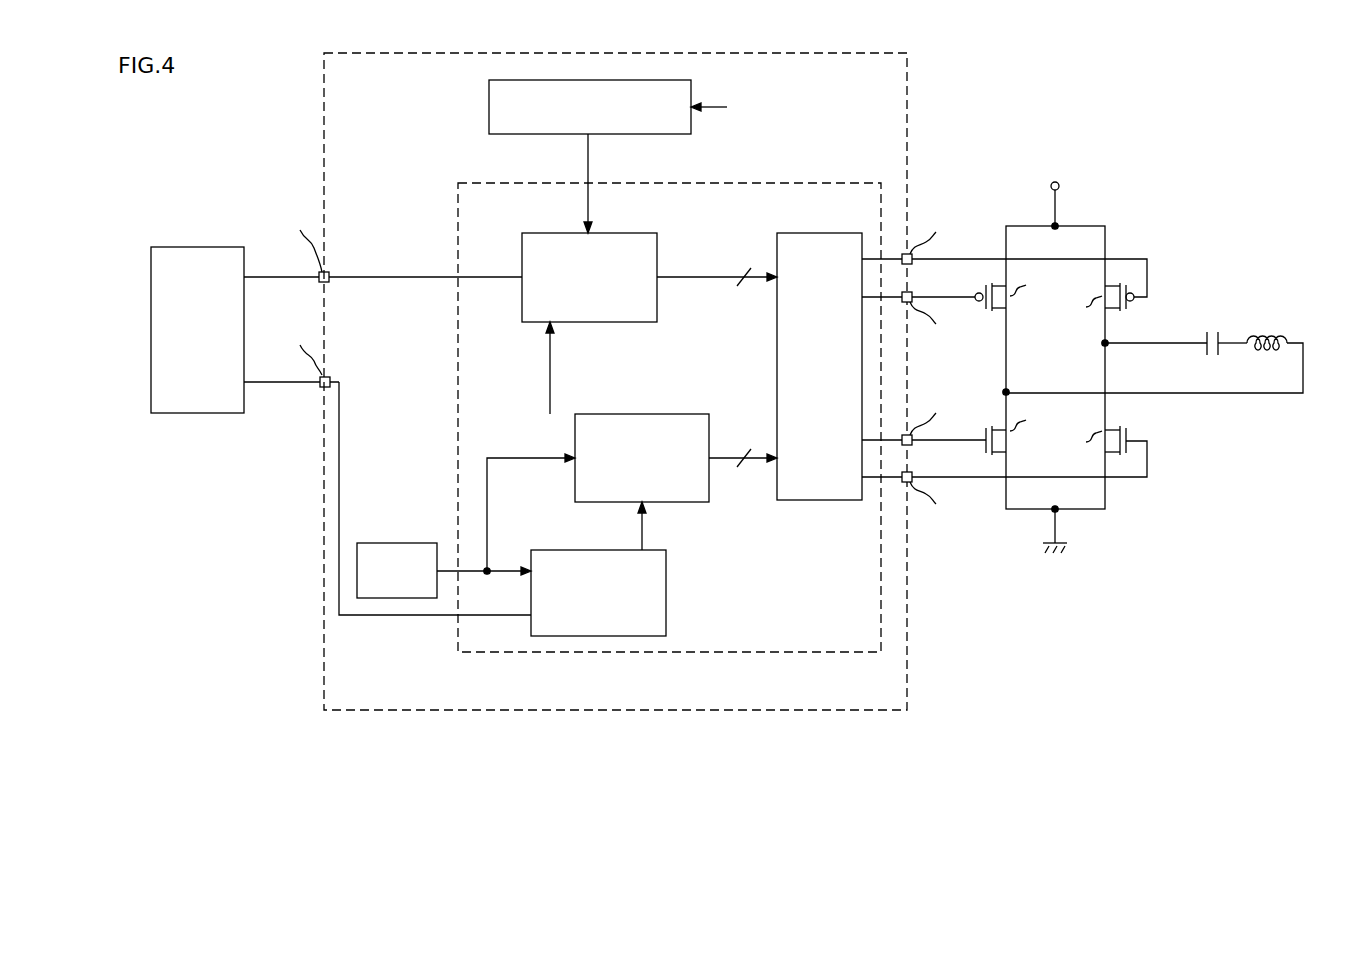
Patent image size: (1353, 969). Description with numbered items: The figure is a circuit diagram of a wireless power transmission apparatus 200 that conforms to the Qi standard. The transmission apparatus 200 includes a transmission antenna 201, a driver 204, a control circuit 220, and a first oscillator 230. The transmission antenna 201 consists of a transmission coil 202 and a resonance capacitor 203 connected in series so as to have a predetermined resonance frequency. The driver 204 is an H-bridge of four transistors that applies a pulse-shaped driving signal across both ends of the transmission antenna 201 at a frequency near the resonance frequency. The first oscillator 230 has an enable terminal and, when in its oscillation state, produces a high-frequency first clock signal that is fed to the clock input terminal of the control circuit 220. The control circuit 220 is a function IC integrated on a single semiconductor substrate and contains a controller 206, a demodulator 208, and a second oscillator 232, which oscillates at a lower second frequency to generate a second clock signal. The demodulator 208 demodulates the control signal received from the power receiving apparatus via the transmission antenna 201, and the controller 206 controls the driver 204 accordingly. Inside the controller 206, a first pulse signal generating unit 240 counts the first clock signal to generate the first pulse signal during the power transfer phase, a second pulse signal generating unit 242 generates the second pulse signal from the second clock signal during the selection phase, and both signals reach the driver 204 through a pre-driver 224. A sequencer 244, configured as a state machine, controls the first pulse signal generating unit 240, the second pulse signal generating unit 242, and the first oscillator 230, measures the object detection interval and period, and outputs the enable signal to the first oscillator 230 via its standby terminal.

The wireless power transmission apparatus 200 is at (748, 802).
The transmission antenna 201 is at (1154, 362).
The transmission coil 202 is at (1265, 334).
The resonance capacitor 203 is at (1210, 328).
The driver 204 is at (1137, 562).
The controller 206 is at (755, 652).
The demodulator 208 is at (488, 101).
The control circuit 220 is at (545, 710).
The pre-driver 224 is at (808, 233).
The first oscillator 230 is at (192, 413).
The second oscillator 232 is at (392, 543).
The first pulse signal generating unit 240 is at (612, 233).
The second pulse signal generating unit 242 is at (660, 414).
The sequencer 244 is at (667, 585).